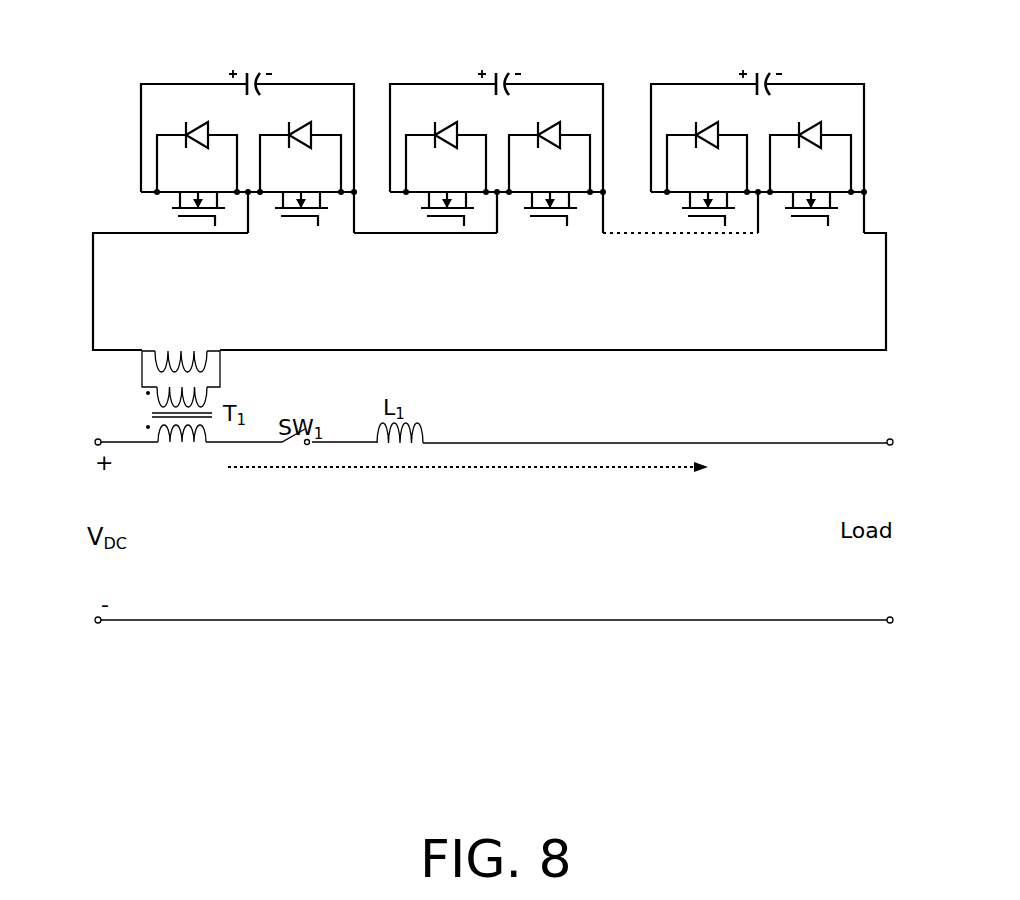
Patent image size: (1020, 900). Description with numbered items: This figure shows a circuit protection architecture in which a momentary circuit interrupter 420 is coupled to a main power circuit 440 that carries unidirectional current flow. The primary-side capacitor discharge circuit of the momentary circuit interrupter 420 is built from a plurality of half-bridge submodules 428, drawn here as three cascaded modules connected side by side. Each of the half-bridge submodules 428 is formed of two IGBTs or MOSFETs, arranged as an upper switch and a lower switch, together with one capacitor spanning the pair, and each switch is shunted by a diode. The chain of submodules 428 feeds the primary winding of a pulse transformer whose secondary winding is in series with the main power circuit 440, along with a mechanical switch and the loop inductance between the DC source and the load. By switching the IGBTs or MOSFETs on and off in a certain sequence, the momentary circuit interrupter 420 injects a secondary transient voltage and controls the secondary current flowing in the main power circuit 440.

The momentary circuit interrupter 420 is at (110, 167).
The half-bridge submodule 428 is at (110, 97).
The main power circuit 440 is at (232, 643).